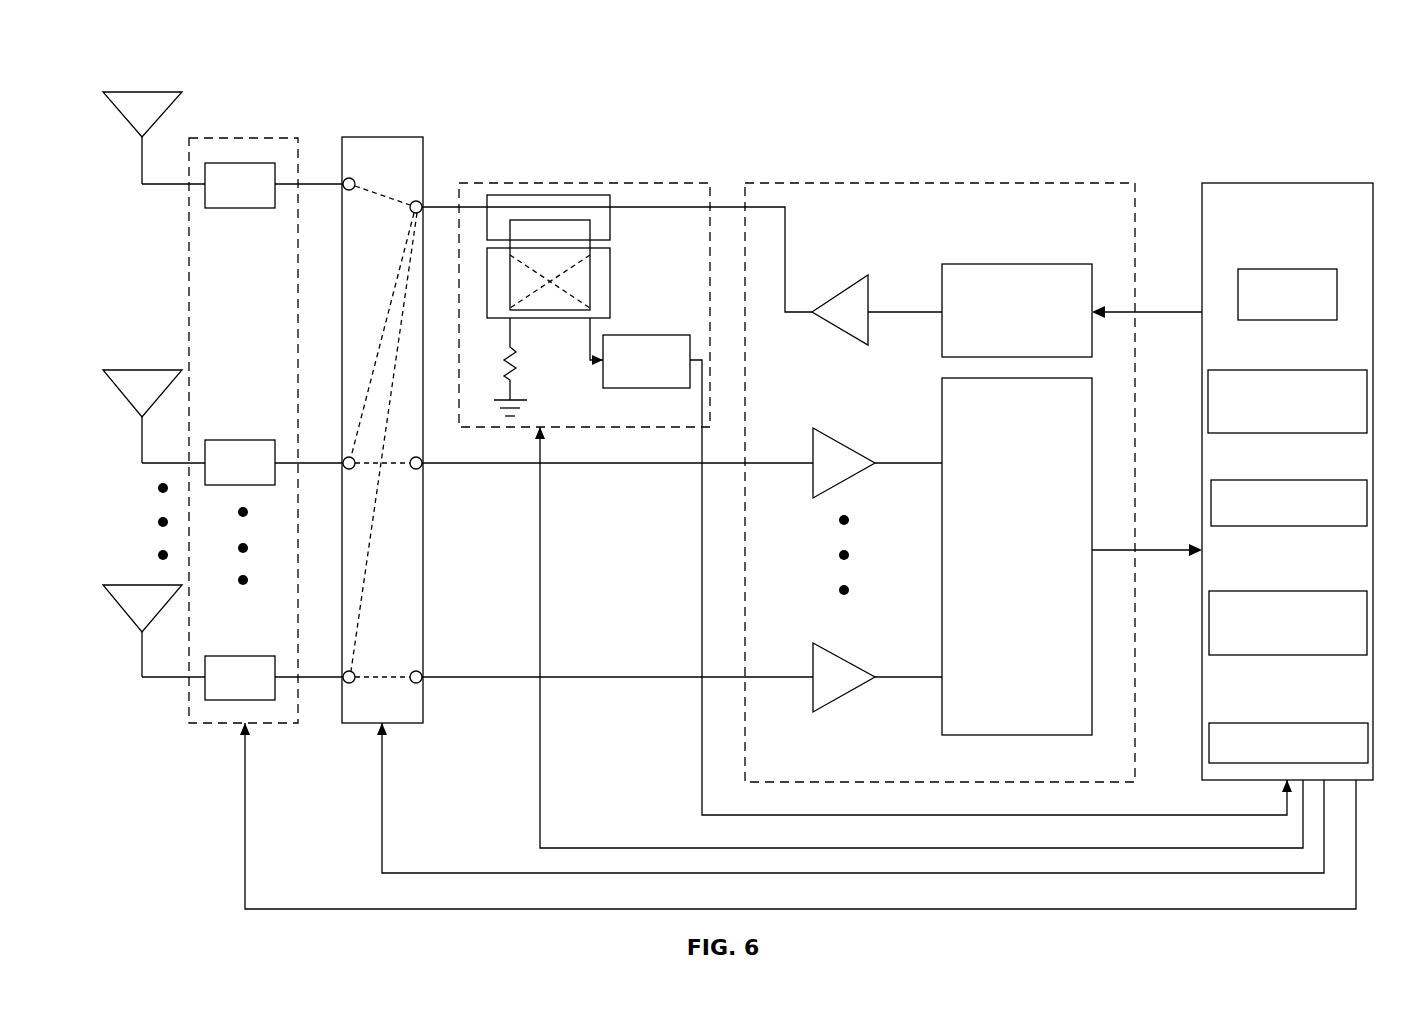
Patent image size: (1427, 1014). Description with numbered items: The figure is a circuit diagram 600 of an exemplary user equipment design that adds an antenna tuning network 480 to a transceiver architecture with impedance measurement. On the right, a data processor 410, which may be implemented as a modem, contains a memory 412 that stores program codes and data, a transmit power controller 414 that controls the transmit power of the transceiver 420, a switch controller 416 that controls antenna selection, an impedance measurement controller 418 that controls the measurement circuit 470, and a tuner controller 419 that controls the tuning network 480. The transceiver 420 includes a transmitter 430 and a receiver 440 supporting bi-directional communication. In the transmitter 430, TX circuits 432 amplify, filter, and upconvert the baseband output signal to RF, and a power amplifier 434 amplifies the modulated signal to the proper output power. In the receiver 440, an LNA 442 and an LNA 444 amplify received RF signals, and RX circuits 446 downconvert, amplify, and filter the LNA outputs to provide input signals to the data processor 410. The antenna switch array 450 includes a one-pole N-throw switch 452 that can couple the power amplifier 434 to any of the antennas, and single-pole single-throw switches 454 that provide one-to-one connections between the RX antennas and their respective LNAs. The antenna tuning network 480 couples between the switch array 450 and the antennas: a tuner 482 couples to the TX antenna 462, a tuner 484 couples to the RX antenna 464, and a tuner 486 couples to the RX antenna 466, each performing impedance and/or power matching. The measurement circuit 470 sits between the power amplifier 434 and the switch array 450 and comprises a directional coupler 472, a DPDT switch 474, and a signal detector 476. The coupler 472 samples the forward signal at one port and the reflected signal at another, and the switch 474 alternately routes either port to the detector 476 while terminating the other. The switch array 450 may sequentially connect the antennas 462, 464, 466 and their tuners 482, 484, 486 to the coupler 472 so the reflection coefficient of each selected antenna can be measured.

The circuit diagram 600 is at (1288, 94).
The data processor 410 is at (1232, 183).
The memory 412 is at (1295, 269).
The transmit power controller 414 is at (1295, 370).
The switch controller 416 is at (1289, 480).
The impedance measurement controller 418 is at (1282, 591).
The tuner controller 419 is at (1282, 723).
The transceiver 420 is at (948, 183).
The transmitter 430 is at (848, 224).
The TX circuits 432 is at (1013, 264).
The power amplifier 434 is at (829, 296).
The receiver 440 is at (822, 742).
The LNA 442 is at (830, 430).
The LNA 444 is at (830, 644).
The RX circuits 446 is at (1020, 736).
The antenna switch array 450 is at (383, 137).
The 1PNT switch 452 is at (421, 204).
The 1P1T switches 454 is at (421, 459).
The antenna 462 is at (125, 118).
The antenna 464 is at (125, 398).
The antenna 466 is at (125, 608).
The measurement circuit 470 is at (666, 183).
The directional coupler 472 is at (610, 218).
The switch 474 is at (610, 280).
The signal detector 476 is at (620, 388).
The antenna tuning network 480 is at (245, 137).
The tuner 482 is at (258, 209).
The tuner 484 is at (233, 439).
The tuner 486 is at (233, 655).